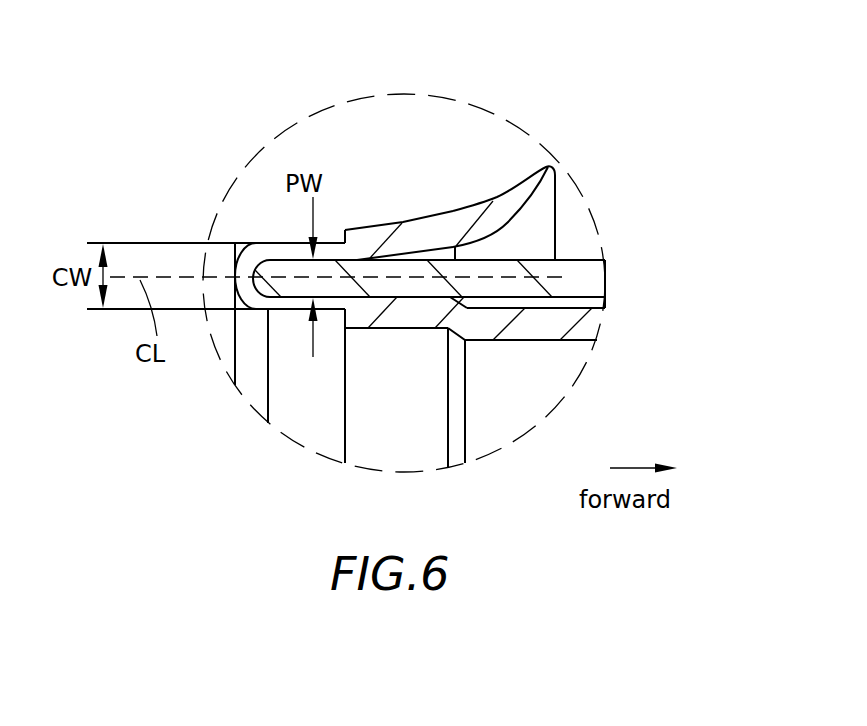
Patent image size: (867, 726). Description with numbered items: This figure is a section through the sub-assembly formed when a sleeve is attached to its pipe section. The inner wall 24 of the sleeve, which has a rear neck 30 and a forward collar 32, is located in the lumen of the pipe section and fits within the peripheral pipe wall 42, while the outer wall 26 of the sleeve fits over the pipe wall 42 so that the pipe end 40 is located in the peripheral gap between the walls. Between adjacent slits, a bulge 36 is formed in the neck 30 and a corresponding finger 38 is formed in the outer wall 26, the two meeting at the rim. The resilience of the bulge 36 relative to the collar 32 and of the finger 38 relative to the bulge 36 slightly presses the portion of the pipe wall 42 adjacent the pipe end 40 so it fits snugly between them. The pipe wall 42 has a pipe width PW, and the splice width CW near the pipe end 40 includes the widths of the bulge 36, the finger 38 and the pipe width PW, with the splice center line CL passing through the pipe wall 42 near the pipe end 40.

The inner wall 24 is at (437, 231).
The outer wall 26 is at (450, 139).
The rear neck 30 is at (276, 383).
The forward collar 32 is at (505, 343).
The bulge 36 is at (283, 313).
The finger 38 is at (498, 193).
The pipe end 40 is at (253, 276).
The pipe wall 42 is at (568, 275).